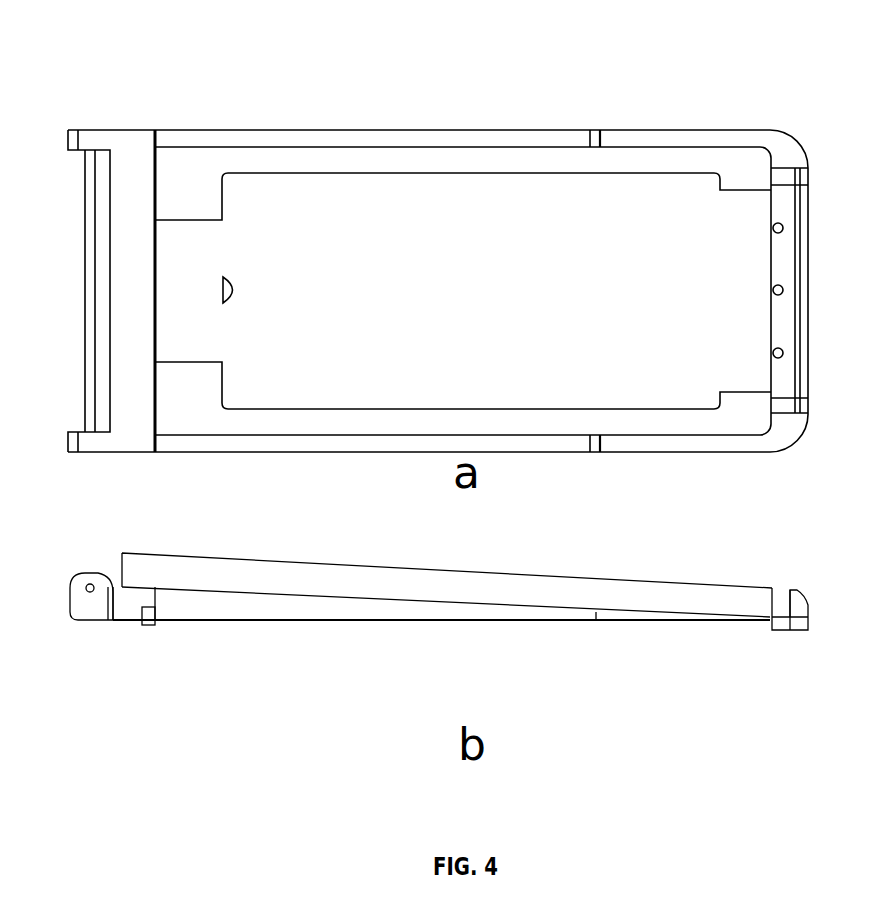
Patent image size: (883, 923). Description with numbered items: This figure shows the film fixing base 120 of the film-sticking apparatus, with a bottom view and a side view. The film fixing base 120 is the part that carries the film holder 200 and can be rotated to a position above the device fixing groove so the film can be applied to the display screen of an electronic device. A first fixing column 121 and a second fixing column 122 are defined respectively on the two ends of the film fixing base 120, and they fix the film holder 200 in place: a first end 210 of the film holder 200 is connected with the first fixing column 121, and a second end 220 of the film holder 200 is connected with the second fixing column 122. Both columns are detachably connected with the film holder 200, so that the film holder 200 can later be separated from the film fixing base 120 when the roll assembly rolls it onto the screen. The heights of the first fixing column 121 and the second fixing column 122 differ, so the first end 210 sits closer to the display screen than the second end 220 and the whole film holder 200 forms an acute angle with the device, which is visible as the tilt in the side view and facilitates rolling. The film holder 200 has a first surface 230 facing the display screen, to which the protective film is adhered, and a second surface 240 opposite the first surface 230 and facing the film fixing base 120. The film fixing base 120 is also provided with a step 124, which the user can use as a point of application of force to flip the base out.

The film fixing base 120 is at (135, 150).
The film holder 200 is at (436, 205).
The second fixing column 122 is at (150, 603).
The second end 220 is at (175, 605).
The first surface 230 is at (383, 620).
The first end 210 is at (698, 612).
The first fixing column 121 is at (779, 610).
The step 124 is at (150, 625).
The second surface 240 is at (430, 622).